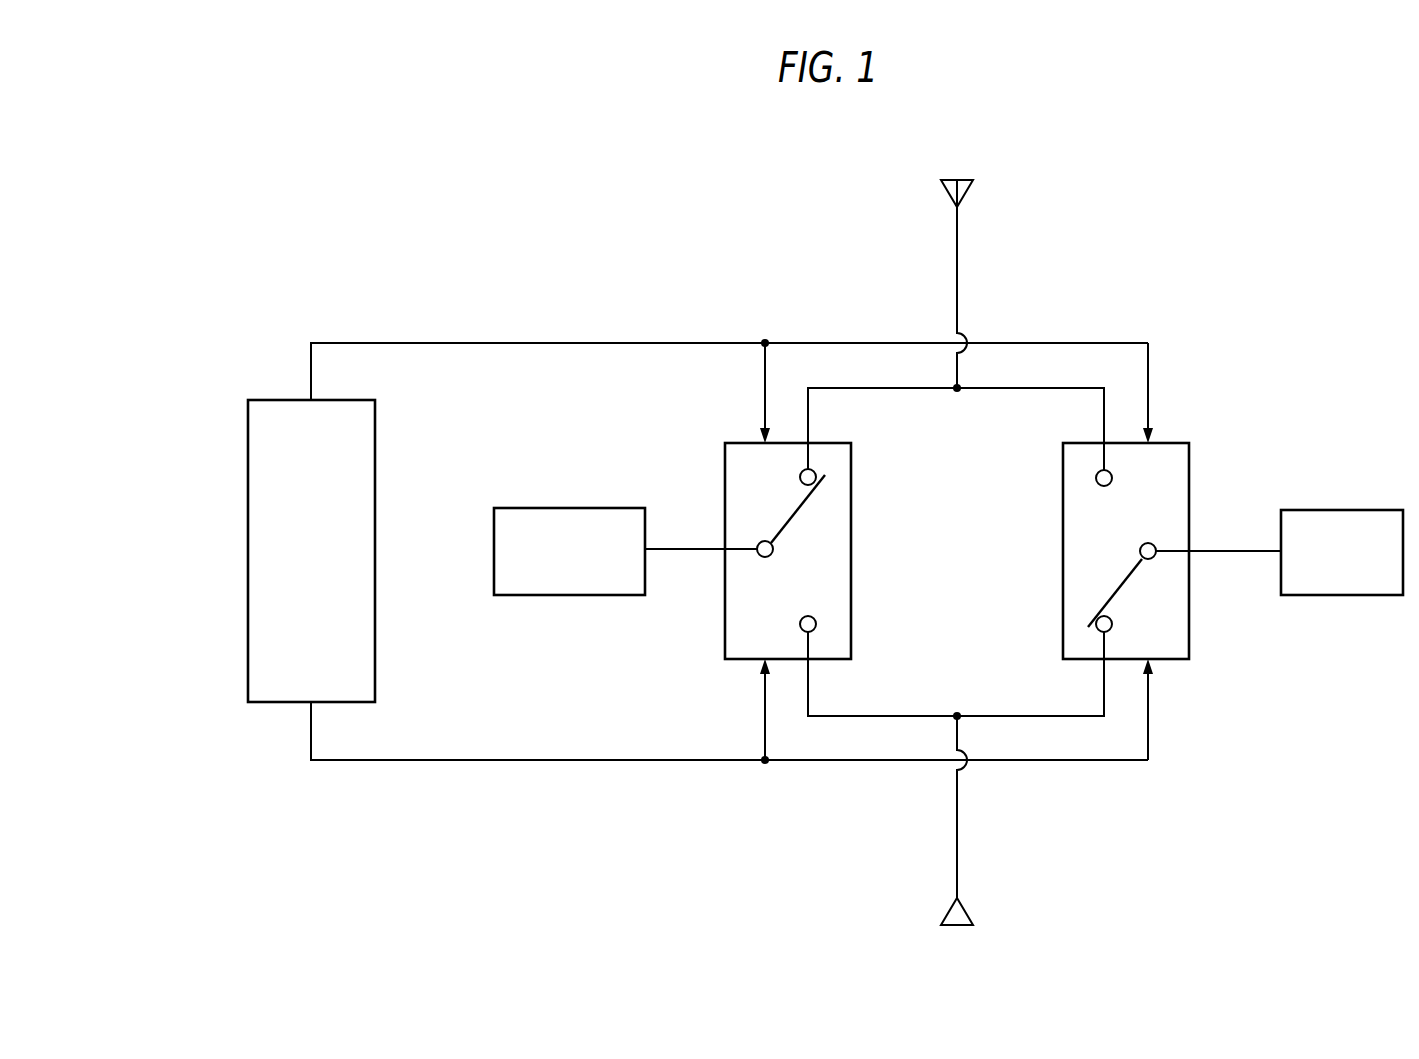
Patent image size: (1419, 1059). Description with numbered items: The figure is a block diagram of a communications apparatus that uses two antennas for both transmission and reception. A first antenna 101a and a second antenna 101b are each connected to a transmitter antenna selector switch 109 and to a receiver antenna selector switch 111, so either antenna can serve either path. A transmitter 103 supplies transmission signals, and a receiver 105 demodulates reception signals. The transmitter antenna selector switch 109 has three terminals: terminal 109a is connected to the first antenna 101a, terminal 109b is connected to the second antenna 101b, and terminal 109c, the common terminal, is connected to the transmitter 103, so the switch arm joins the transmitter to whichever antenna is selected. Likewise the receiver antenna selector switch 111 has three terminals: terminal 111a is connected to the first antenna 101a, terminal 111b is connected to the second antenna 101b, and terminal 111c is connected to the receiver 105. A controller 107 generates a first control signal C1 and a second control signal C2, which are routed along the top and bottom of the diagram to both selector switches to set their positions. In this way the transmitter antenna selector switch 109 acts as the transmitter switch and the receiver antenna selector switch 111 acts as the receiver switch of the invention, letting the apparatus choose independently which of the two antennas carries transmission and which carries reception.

The first antenna 101a is at (961, 182).
The second antenna 101b is at (961, 909).
The transmitter 103 is at (592, 492).
The receiver 105 is at (1346, 510).
The controller 107 is at (284, 400).
The transmitter antenna selector switch 109 is at (820, 551).
The terminal 109a is at (800, 475).
The terminal 109b is at (800, 625).
The terminal 109c is at (768, 557).
The receiver antenna selector switch 111 is at (1093, 551).
The terminal 111a is at (1112, 478).
The terminal 111b is at (1112, 626).
The terminal 111c is at (1144, 544).
The first control signal C1 is at (550, 343).
The second control signal C2 is at (550, 760).